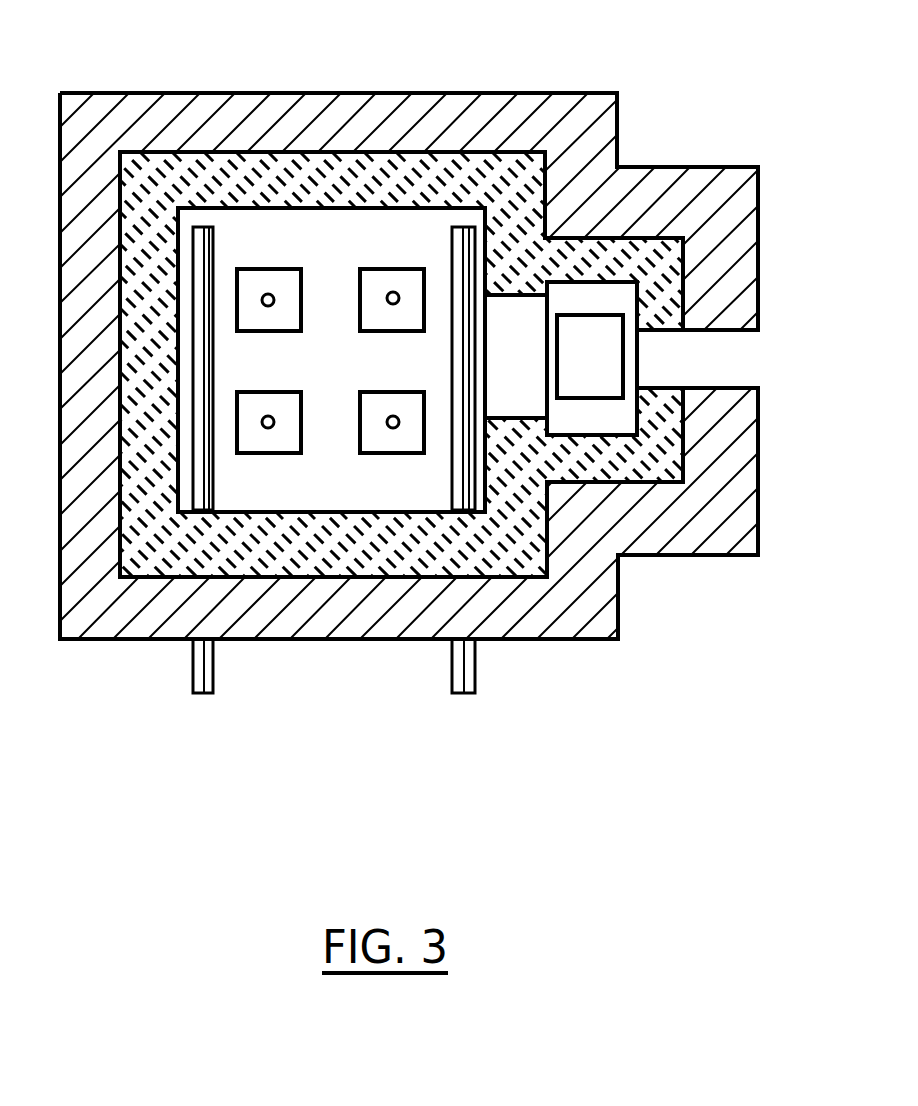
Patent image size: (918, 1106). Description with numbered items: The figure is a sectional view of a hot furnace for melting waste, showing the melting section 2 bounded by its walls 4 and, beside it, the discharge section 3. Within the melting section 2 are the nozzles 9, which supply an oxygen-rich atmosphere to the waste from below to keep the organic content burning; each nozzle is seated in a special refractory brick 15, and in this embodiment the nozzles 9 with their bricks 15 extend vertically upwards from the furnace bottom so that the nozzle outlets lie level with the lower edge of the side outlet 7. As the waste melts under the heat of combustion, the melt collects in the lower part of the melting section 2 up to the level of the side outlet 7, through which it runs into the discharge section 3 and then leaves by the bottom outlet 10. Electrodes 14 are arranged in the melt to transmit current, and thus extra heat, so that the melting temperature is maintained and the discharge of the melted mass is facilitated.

The melting section 2 is at (311, 350).
The discharge section 3 is at (615, 302).
The walls 4 is at (287, 180).
The side outlet 7 is at (517, 323).
The nozzles/valves 9 is at (393, 291).
The bottom outlet 10 is at (602, 382).
The electrodes 14 is at (213, 673).
The refractory bricks 15 is at (415, 278).